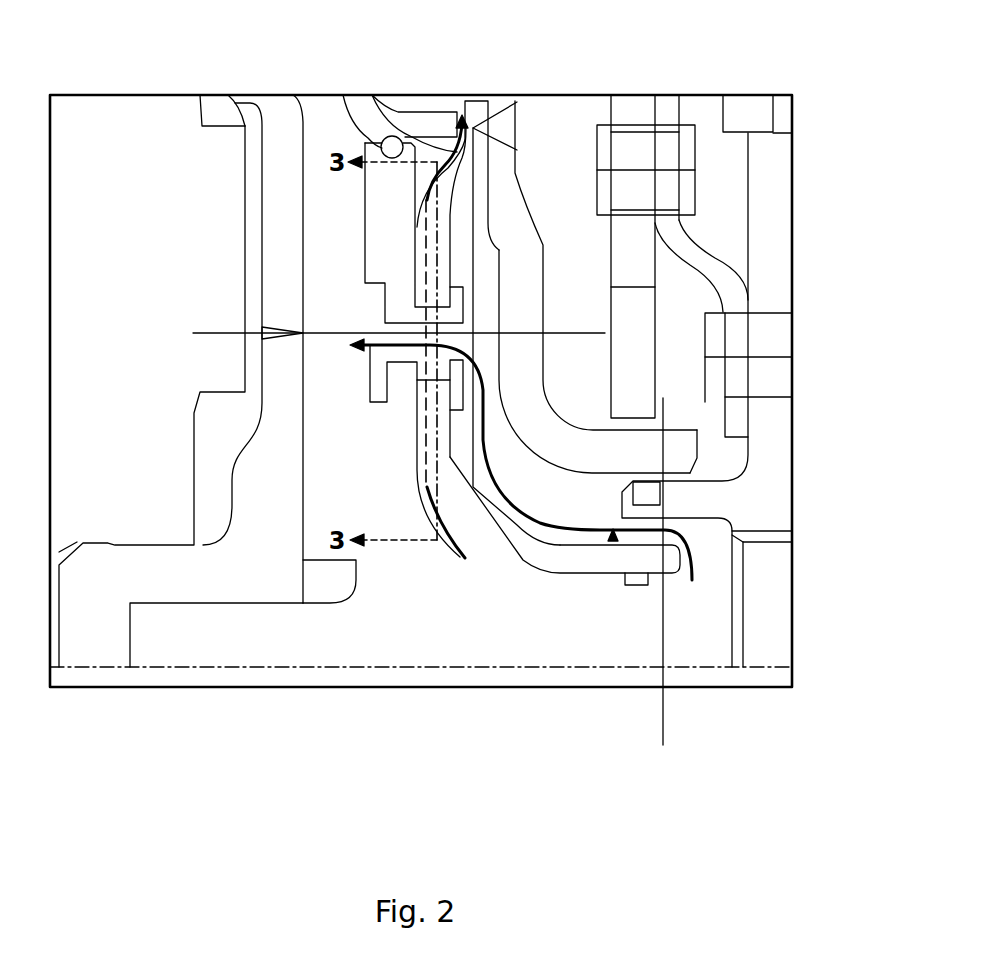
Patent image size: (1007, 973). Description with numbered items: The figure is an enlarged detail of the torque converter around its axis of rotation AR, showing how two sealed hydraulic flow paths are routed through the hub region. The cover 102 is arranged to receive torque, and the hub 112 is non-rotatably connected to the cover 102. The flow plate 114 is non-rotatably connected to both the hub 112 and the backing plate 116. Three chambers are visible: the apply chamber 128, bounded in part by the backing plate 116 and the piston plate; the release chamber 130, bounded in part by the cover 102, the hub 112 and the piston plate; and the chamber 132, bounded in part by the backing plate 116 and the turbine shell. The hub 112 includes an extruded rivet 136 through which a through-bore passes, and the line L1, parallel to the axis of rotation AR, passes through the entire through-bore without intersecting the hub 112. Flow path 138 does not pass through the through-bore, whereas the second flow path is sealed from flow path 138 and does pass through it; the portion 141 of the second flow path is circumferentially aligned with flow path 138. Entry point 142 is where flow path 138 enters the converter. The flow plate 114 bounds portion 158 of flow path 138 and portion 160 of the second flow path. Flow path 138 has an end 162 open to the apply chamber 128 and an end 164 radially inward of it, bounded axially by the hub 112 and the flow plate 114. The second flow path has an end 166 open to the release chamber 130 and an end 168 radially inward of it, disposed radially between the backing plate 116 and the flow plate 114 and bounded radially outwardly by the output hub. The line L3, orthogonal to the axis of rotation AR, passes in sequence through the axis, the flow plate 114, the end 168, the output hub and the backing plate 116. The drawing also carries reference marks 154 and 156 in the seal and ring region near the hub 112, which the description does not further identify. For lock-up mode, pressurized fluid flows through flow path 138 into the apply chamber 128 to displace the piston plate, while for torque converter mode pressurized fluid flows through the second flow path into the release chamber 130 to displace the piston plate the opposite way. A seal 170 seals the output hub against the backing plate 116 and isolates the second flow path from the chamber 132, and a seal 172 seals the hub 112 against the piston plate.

The cover 102 is at (277, 197).
The hub 112 is at (357, 590).
The flow plate 114 is at (560, 560).
The backing plate 116 is at (692, 448).
The apply chamber 128 is at (423, 110).
The release chamber 130 is at (330, 250).
The chamber 132 is at (580, 100).
The extruded rivet 136 is at (456, 287).
The flow path 138 is at (427, 507).
The portion of flow path 141 is at (427, 343).
The entry point 142 is at (370, 346).
The seal lip 154 is at (515, 105).
The inner ring 156 is at (510, 433).
The portion of flow path 158 is at (372, 95).
The portion of flow path 160 is at (518, 508).
The end 162 is at (452, 113).
The end 164 is at (450, 545).
The end 166 is at (360, 343).
The end 168 is at (693, 572).
The seal 170 is at (652, 492).
The seal 172 is at (378, 150).
The line L1 is at (228, 333).
The line L3 is at (666, 720).
The axis of rotation AR is at (760, 667).